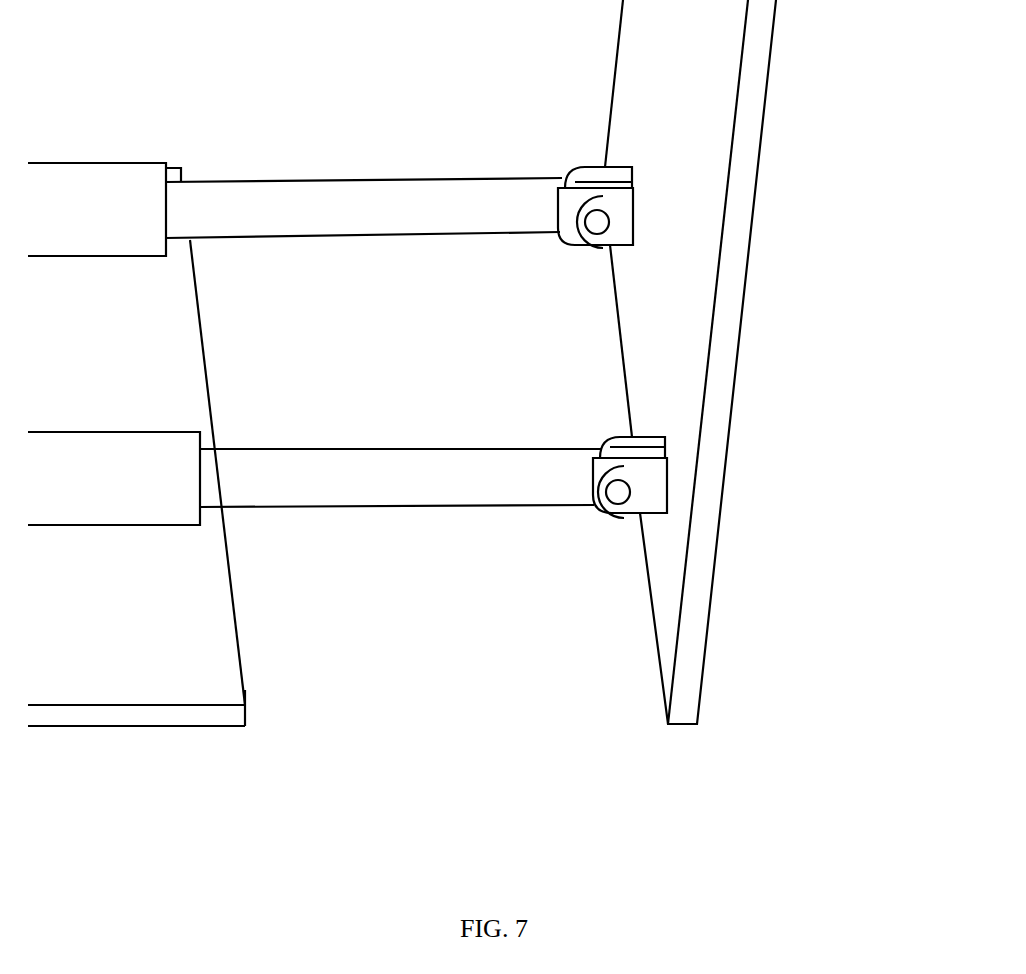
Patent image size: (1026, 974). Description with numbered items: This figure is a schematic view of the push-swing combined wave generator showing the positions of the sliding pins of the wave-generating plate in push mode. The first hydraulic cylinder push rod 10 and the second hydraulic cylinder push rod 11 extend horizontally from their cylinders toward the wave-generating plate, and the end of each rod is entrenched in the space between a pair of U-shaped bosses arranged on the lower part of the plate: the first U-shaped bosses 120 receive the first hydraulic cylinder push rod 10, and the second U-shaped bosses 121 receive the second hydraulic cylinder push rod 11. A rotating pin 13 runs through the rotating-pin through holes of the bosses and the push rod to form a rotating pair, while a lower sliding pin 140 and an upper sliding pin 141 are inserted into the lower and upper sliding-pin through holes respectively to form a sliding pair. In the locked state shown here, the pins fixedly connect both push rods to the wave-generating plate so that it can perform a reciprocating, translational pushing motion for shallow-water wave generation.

The first hydraulic cylinder push rod 10 is at (422, 480).
The second hydraulic cylinder push rod 11 is at (338, 203).
The rotating pin 13 is at (600, 224).
The second U-shaped boss 121 is at (615, 212).
The upper sliding pin 141 is at (622, 478).
The first U-shaped boss 120 is at (650, 488).
The lower sliding pin 140 is at (620, 505).